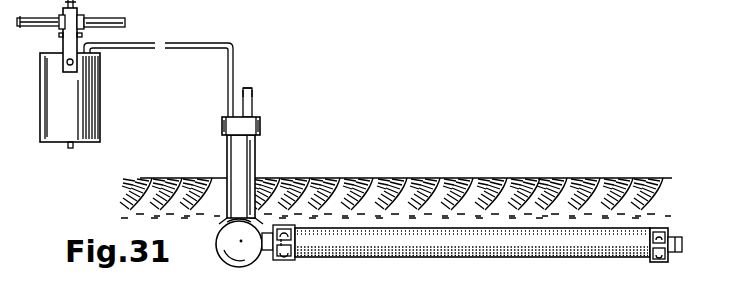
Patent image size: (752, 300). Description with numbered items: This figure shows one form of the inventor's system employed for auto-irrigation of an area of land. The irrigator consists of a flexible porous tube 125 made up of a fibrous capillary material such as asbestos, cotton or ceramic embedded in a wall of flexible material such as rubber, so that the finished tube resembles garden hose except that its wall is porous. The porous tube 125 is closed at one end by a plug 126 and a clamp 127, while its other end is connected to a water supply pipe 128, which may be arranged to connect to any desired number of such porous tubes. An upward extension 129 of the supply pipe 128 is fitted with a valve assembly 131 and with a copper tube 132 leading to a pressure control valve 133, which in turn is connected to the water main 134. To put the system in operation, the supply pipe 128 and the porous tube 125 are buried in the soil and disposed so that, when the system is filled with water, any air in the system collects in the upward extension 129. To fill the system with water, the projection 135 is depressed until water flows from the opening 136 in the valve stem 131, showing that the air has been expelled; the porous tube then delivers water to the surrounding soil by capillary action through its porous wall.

The flexible porous tube 125 is at (410, 258).
The plug 126 is at (409, 202).
The clamp 127 is at (656, 262).
The water supply pipe 128 is at (262, 263).
The upward extension 129 is at (256, 155).
The valve assembly 131 is at (262, 126).
The copper tube 132 is at (138, 44).
The pressure control valve 133 is at (100, 98).
The water main 134 is at (124, 22).
The projection 135 is at (253, 100).
The opening 136 is at (249, 89).